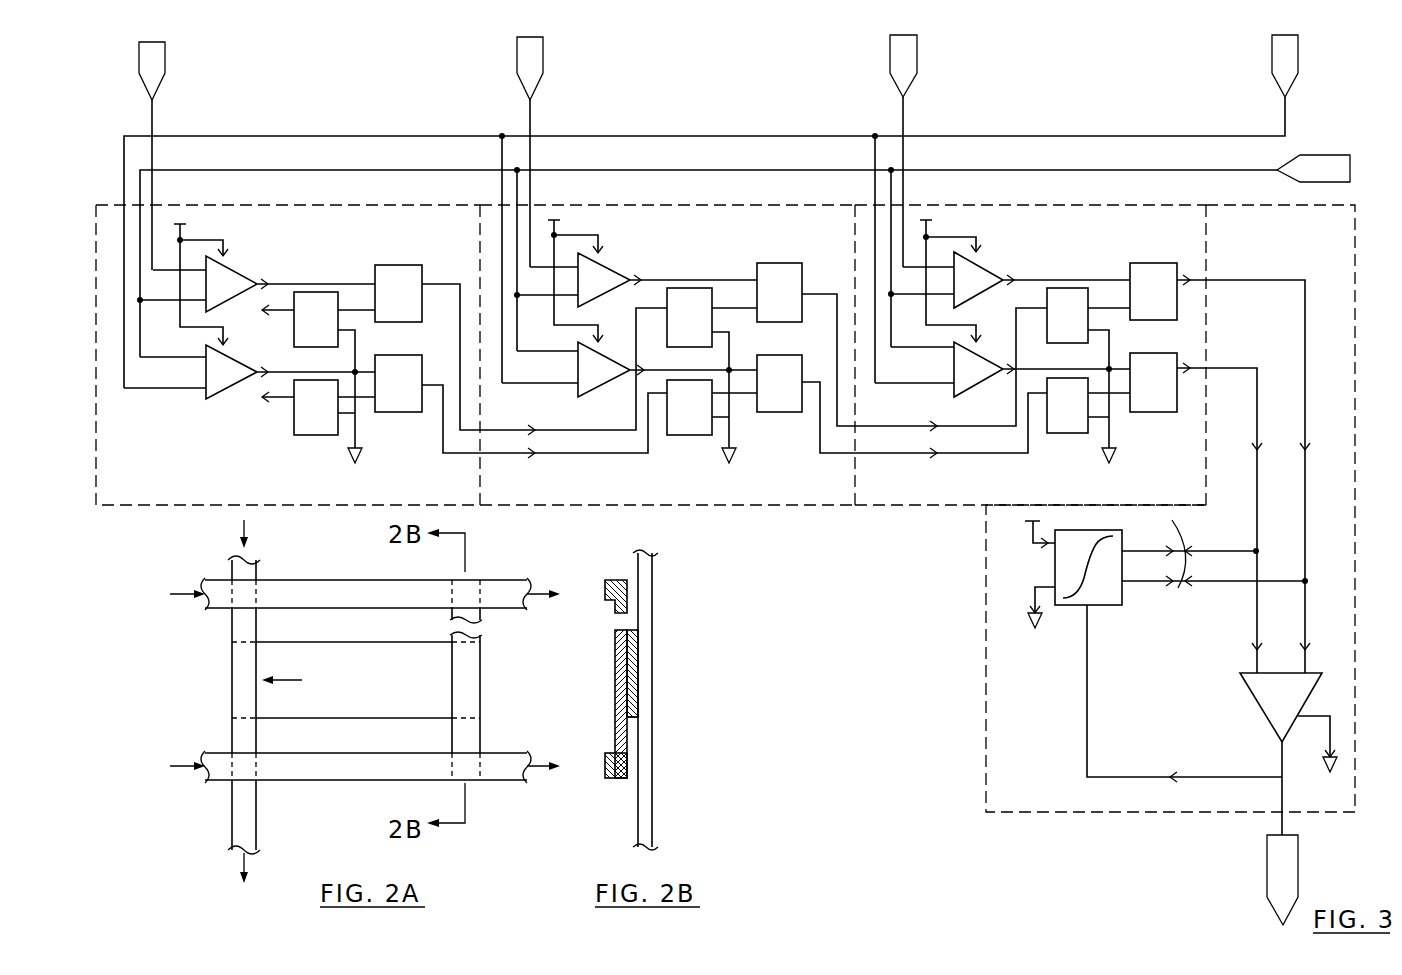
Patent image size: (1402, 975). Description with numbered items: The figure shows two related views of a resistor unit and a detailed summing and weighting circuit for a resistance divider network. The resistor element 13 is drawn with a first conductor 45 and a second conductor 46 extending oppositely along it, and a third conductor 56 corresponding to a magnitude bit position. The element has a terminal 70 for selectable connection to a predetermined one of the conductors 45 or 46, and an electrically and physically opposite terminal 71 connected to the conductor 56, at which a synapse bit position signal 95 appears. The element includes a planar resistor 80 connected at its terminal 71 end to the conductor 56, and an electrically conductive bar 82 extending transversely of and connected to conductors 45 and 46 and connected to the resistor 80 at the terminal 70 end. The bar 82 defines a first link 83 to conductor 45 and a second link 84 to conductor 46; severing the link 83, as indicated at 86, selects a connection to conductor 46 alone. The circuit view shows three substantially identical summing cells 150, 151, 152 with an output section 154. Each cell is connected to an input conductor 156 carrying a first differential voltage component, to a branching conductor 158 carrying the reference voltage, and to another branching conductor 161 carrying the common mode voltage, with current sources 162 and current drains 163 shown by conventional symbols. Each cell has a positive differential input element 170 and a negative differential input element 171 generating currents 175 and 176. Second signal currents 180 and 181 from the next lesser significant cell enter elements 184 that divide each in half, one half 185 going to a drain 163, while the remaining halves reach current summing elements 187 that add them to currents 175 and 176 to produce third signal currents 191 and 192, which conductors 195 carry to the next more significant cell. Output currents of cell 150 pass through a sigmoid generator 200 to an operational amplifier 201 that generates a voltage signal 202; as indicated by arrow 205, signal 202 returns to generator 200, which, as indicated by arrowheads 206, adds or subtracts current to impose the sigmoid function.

In FIG. 2A, the resistor element 13 is at (220, 790).
In FIG. 2B, the resistor element 13 is at (652, 648).
In FIG. 2A, the first conductor 45 is at (505, 587).
In FIG. 2B, the first conductor 45 is at (615, 590).
In FIG. 2A, the second conductor 46 is at (512, 772).
In FIG. 2B, the second conductor 46 is at (612, 780).
In FIG. 2A, the third conductor 56 is at (247, 572).
In FIG. 2B, the third conductor 56 is at (655, 847).
In FIG. 2A, the terminal 70 is at (468, 668).
In FIG. 2B, the terminal 70 is at (630, 635).
In FIG. 2A, the terminal 71 is at (238, 673).
In FIG. 2B, the terminal 71 is at (632, 720).
In FIG. 2A, the planar resistor 80 is at (380, 658).
In FIG. 2B, the planar resistor 80 is at (640, 672).
In FIG. 2A, the electrically conductive bar 82 is at (452, 730).
In FIG. 2B, the electrically conductive bar 82 is at (618, 672).
In FIG. 2A, the first link 83 is at (480, 638).
In FIG. 2B, the first link 83 is at (618, 638).
In FIG. 2B, the second link 84 is at (618, 723).
In FIG. 2A, the severed link indication 86 is at (470, 626).
In FIG. 2B, the severed link indication 86 is at (620, 628).
In FIG. 2A, the synapse bit position signal 95 is at (300, 668).
In FIG. 3, the summing cell 150 is at (1053, 205).
In FIG. 3, the summing cell 151 is at (697, 205).
In FIG. 3, the summing cell 152 is at (345, 205).
In FIG. 3, the output section 154 is at (987, 680).
In FIG. 3, the input conductor 156 is at (154, 106).
In FIG. 3, the branching conductor 158 is at (1197, 135).
In FIG. 3, the branching conductor 161 is at (1255, 166).
In FIG. 3, the current source 162 is at (186, 224).
In FIG. 3, the current drain 163 is at (358, 465).
In FIG. 3, the positive differential input element 170 is at (237, 270).
In FIG. 3, the negative differential input element 171 is at (215, 410).
In FIG. 3, the current 175 is at (264, 304).
In FIG. 3, the current 176 is at (262, 405).
In FIG. 3, the second signal current 180 is at (540, 430).
In FIG. 3, the second signal current 181 is at (540, 453).
In FIG. 3, the dividing element 184 is at (302, 347).
In FIG. 3, the current half 185 is at (350, 372).
In FIG. 3, the current summing element 187 is at (400, 324).
In FIG. 3, the third signal current 191 is at (455, 284).
In FIG. 3, the third signal current 192 is at (843, 455).
In FIG. 3, the conductor 195 is at (612, 430).
In FIG. 3, the sigmoid generator 200 is at (1110, 593).
In FIG. 3, the operational amplifier 201 is at (1262, 690).
In FIG. 3, the voltage signal 202 is at (1296, 862).
In FIG. 3, the arrow 205 is at (1170, 776).
In FIG. 3, the arrowheads 206 is at (1215, 553).